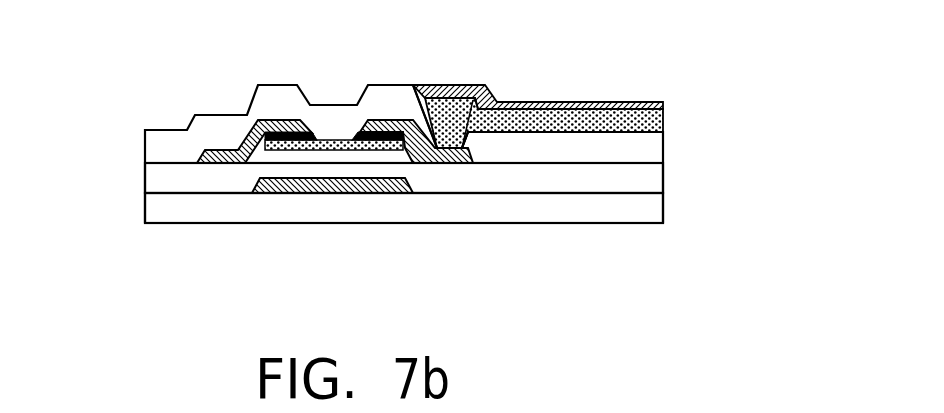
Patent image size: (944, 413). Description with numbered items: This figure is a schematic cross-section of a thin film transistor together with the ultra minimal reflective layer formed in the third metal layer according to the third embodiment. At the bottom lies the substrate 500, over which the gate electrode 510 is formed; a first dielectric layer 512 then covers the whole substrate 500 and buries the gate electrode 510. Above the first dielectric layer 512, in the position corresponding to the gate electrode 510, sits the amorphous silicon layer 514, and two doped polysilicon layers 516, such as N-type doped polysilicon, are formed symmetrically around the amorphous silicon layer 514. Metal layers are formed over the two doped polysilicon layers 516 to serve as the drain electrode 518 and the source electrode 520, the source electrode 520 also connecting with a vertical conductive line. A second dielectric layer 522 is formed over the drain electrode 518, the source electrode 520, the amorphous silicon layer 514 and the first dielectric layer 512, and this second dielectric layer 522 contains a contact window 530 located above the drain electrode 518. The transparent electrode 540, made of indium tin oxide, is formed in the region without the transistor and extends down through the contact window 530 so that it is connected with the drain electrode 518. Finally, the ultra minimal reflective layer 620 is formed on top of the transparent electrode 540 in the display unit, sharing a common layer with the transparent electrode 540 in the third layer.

The substrate 500 is at (163, 213).
The gate electrode 510 is at (223, 180).
The first dielectric layer 512 is at (153, 172).
The amorphous silicon layer 514 is at (287, 142).
The doped polysilicon layers 516 is at (388, 142).
The drain electrode 518 is at (470, 152).
The source electrode 520 is at (200, 155).
The second dielectric layer 522 is at (660, 150).
The contact window 530 is at (452, 103).
The transparent electrode 540 is at (665, 116).
The ultra minimal reflective layer 620 is at (658, 102).